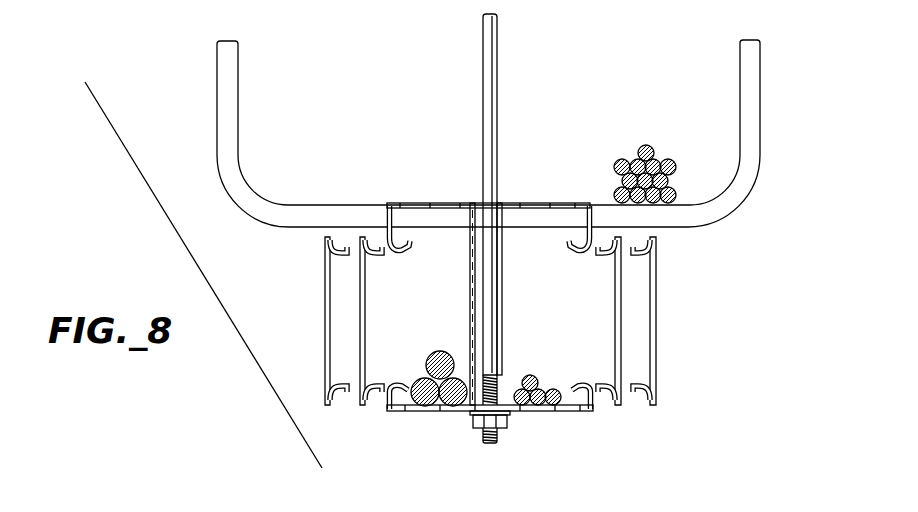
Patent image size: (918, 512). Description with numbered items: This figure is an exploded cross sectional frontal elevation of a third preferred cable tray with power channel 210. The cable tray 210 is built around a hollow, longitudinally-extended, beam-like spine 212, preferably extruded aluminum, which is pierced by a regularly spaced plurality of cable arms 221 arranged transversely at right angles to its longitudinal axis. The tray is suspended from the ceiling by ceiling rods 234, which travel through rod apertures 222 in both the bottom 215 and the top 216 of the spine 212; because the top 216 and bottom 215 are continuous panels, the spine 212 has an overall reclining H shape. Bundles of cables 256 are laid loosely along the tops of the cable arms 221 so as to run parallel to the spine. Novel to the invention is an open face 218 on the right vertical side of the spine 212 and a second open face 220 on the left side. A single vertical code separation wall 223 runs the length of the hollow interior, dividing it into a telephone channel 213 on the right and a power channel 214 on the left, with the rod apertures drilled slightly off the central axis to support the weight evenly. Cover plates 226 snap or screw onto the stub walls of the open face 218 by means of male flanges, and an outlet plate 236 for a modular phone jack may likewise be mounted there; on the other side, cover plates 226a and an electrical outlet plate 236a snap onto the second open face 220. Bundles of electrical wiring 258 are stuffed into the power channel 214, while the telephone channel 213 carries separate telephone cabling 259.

The cable tray with power channel 210 is at (620, 54).
The spine 212 is at (465, 224).
The telephone channel 213 is at (518, 245).
The power channel 214 is at (449, 245).
The bottom 215 is at (583, 411).
The top 216 is at (510, 190).
The open face 218 is at (581, 250).
The second open face 220 is at (387, 215).
The cable arms 221 is at (750, 88).
The rod apertures 222 is at (452, 274).
The vertical code separation wall 223 is at (468, 326).
The cover plates 226 is at (615, 292).
The cover plates 226a is at (366, 296).
The ceiling rods 234 is at (498, 45).
The outlet plate 236 is at (657, 320).
The outlet plate 236a is at (325, 322).
The bundles of cables 256 is at (648, 146).
The bundles of electrical wiring 258 is at (440, 351).
The telephone cabling 259 is at (535, 377).